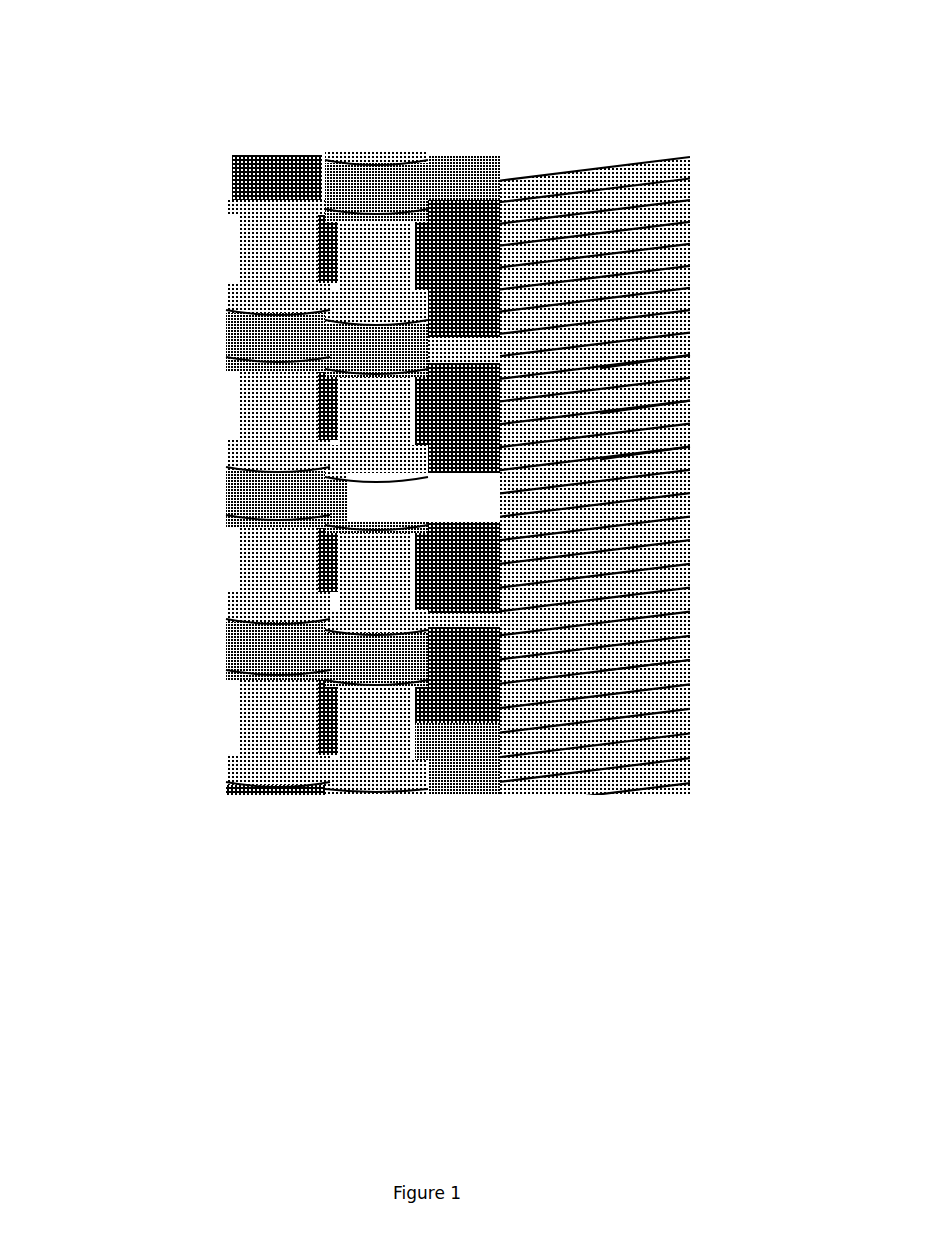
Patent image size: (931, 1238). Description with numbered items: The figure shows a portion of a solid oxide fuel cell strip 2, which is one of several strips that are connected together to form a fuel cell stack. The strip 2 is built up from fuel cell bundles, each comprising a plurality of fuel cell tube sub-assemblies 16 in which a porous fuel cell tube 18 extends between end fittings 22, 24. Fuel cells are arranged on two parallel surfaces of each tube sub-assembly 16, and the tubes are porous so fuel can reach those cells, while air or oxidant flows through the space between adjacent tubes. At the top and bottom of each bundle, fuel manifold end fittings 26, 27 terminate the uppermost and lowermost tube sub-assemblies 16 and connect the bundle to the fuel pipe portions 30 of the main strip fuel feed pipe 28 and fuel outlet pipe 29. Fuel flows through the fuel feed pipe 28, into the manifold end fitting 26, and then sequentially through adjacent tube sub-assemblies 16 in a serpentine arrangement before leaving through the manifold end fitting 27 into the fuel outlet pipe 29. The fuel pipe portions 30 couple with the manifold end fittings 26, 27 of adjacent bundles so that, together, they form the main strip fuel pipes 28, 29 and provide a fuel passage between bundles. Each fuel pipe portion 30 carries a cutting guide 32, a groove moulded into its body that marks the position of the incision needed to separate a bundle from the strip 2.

The fuel cell strip 2 is at (687, 88).
The fuel cell tube sub-assembly 16 is at (688, 683).
The fuel cell tube 18 is at (688, 455).
The end fitting 22 is at (512, 287).
The end fitting 24 is at (515, 310).
The fuel manifold end fitting 26 is at (477, 200).
The fuel manifold end fitting 27 is at (230, 157).
The fuel feed pipe 28 is at (370, 797).
The fuel outlet pipe 29 is at (273, 797).
The fuel pipe portion 30 is at (373, 400).
The cutting guide 32 is at (238, 404).